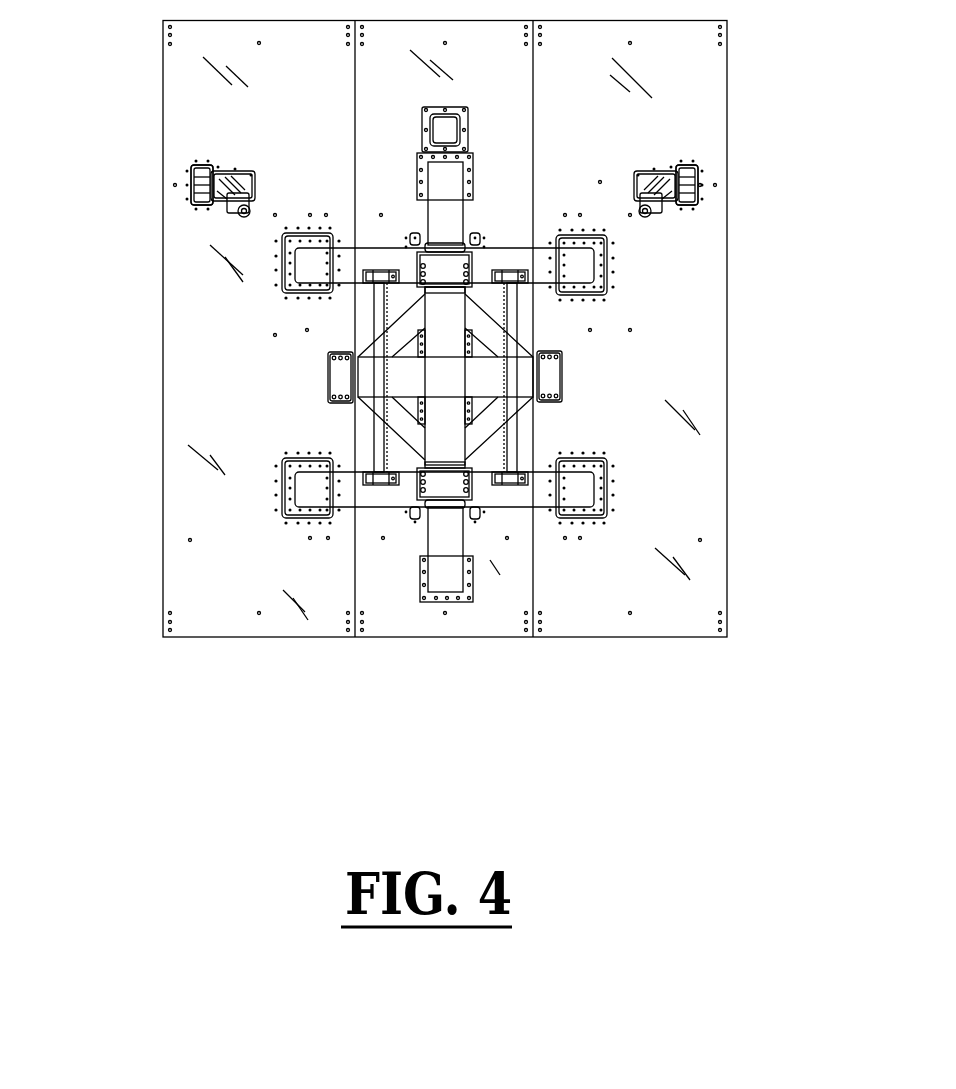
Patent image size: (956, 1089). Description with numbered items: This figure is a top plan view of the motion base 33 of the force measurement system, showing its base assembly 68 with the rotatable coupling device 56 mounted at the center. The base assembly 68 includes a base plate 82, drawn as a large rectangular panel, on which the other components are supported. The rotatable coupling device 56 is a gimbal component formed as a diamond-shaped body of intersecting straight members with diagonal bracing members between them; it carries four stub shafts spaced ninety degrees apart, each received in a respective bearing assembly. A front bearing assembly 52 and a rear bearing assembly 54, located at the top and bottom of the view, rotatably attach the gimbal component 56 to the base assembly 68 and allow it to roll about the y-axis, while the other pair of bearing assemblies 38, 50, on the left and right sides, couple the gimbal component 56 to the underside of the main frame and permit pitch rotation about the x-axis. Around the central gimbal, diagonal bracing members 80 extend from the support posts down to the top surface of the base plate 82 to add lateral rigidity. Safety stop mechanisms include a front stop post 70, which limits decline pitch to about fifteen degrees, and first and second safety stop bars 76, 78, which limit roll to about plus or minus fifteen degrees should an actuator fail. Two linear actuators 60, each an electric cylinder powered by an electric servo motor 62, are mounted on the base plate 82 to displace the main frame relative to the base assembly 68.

The motion base 33 is at (420, 329).
The bearing assembly 38 is at (335, 382).
The bearing assembly 50 is at (548, 381).
The front bearing assembly 52 is at (435, 272).
The rear bearing assembly 54 is at (468, 488).
The rotatable coupling device 56 is at (497, 373).
The linear actuator 60 is at (200, 207).
The electric servo motor 62 is at (258, 187).
The base assembly 68 is at (499, 395).
The front stop post 70 is at (443, 133).
The first safety stop bar 76 is at (383, 440).
The second safety stop bar 78 is at (513, 448).
The diagonal bracing member 80 is at (435, 215).
The base plate 82 is at (700, 82).